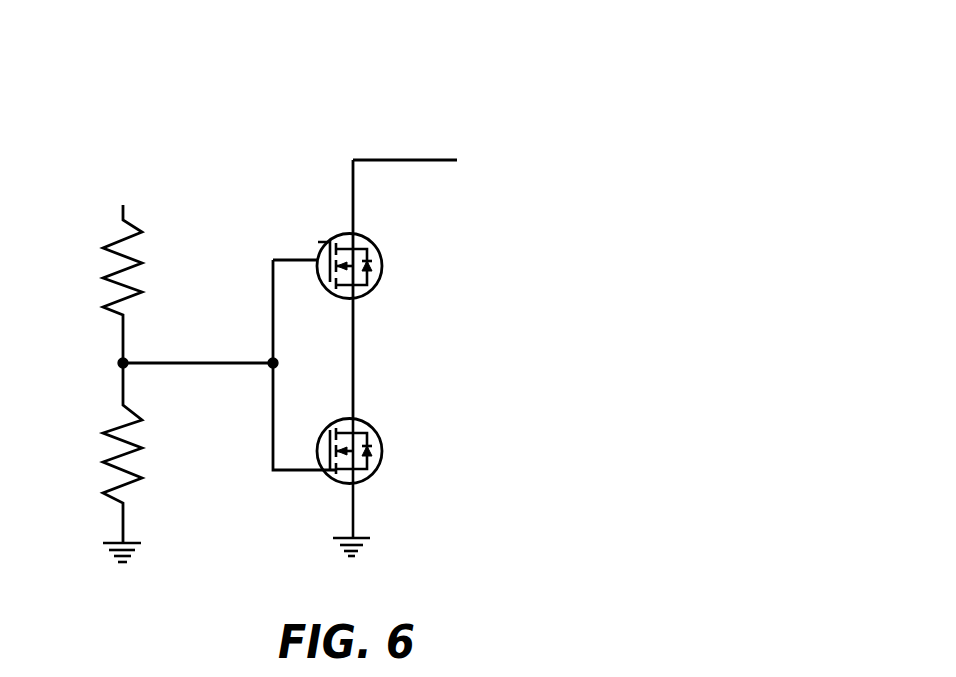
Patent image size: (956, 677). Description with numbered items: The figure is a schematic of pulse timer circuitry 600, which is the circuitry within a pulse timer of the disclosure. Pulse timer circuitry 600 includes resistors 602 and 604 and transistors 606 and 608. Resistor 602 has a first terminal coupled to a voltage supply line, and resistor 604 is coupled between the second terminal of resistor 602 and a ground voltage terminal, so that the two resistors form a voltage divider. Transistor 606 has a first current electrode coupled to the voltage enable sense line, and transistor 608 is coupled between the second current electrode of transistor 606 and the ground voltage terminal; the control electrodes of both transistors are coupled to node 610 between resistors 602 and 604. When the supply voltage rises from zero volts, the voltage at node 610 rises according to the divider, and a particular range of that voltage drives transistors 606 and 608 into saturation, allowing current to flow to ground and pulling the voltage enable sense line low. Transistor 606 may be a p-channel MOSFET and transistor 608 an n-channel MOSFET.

The pulse timer circuitry 600 is at (571, 126).
The resistor 602 is at (137, 288).
The resistor 604 is at (142, 477).
The transistor 606 is at (380, 258).
The transistor 608 is at (380, 440).
The node 610 is at (122, 362).